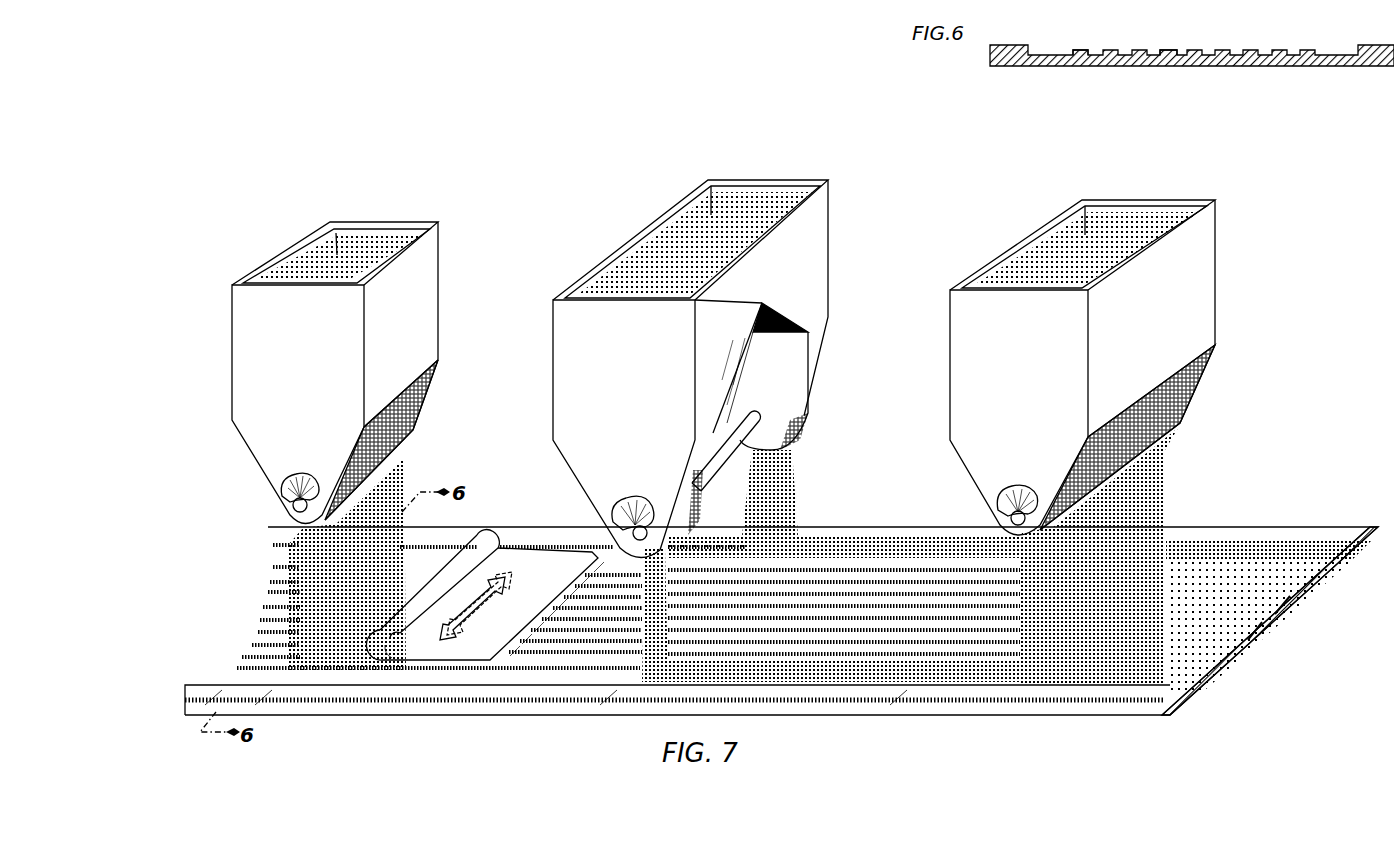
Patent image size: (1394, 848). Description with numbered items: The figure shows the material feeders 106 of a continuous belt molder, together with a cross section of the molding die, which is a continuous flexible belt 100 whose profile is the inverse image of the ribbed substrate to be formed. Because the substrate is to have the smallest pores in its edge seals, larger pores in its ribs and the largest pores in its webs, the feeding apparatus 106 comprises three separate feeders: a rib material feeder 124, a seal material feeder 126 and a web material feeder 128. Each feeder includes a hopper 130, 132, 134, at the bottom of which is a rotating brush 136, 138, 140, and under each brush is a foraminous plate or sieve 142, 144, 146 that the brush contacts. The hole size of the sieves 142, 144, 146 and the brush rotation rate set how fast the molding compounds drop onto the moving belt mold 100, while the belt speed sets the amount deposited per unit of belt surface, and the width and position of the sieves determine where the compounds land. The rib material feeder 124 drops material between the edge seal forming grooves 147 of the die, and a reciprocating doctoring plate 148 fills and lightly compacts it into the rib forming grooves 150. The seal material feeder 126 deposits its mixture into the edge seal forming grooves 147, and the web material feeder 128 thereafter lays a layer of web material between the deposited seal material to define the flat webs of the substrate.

In FIG. 6, the continuous flexible belt 100 is at (1393, 42).
In FIG. 7, the continuous flexible belt 100 is at (1299, 527).
In FIG. 7, the material feeders 106 is at (396, 198).
In FIG. 7, the rib material feeder 124 is at (446, 250).
In FIG. 7, the seal material feeder 126 is at (832, 213).
In FIG. 7, the web material feeder 128 is at (1220, 228).
In FIG. 7, the hopper 130 is at (415, 304).
In FIG. 7, the hopper 132 is at (762, 294).
In FIG. 7, the hopper 134 is at (1157, 288).
In FIG. 7, the rotating brush 136 is at (290, 495).
In FIG. 7, the rotating brush 138 is at (616, 520).
In FIG. 7, the rotating brush 140 is at (1006, 510).
In FIG. 7, the foraminous plate or sieve 142 is at (410, 442).
In FIG. 7, the foraminous plate or sieve 144 is at (798, 428).
In FIG. 7, the foraminous plate or sieve 146 is at (1171, 436).
In FIG. 6, the edge seal forming grooves 147 is at (1058, 44).
In FIG. 7, the edge seal forming grooves 147 is at (1345, 562).
In FIG. 7, the reciprocating doctoring plate 148 is at (498, 567).
In FIG. 6, the rib forming grooves 150 is at (1208, 56).
In FIG. 7, the rib forming grooves 150 is at (1285, 618).